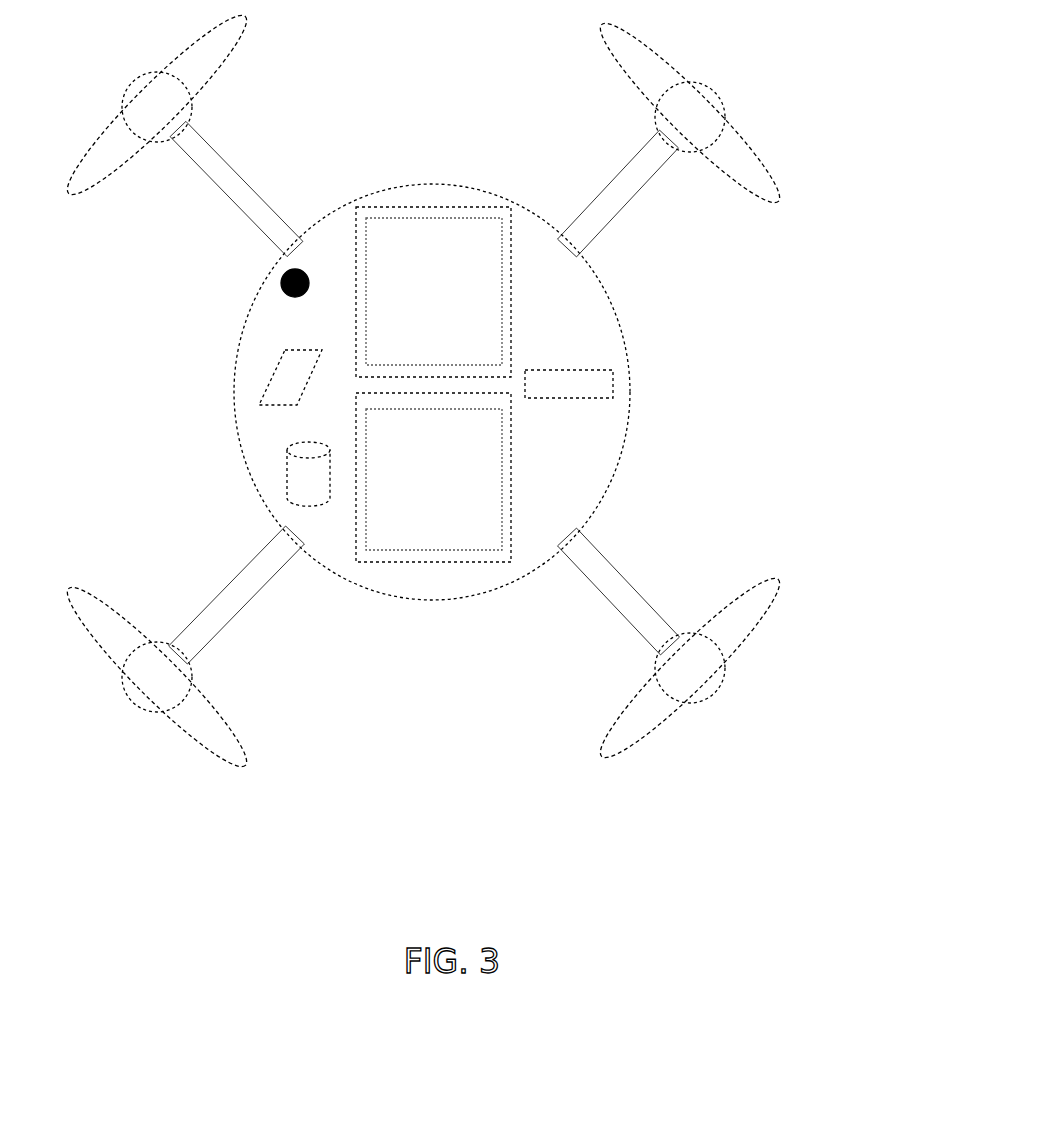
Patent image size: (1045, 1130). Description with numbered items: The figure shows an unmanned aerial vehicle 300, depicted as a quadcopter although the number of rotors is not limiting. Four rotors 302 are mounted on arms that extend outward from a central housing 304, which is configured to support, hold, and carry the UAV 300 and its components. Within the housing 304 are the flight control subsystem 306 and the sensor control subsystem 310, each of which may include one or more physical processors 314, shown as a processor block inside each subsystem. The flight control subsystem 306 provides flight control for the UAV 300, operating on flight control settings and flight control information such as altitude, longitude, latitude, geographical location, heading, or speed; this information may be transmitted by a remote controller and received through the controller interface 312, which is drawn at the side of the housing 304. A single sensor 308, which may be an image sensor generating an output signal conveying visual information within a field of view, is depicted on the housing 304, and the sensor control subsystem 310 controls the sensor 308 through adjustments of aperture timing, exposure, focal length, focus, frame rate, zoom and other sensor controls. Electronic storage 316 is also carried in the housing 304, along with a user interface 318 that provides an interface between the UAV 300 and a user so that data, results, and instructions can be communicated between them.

The unmanned aerial vehicle 300 is at (484, 404).
The rotors 302 is at (745, 617).
The housing 304 is at (253, 436).
The flight control subsystem 306 is at (366, 212).
The sensor 308 is at (272, 290).
The sensor control subsystem 310 is at (372, 563).
The controller interface 312 is at (626, 384).
The physical processors 314 is at (474, 218).
The electronic storage 316 is at (290, 472).
The user interface 318 is at (268, 372).